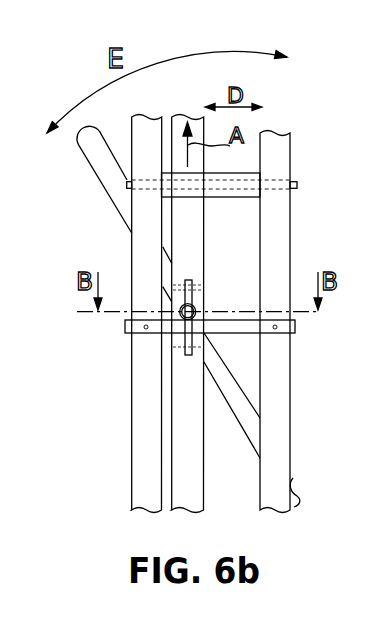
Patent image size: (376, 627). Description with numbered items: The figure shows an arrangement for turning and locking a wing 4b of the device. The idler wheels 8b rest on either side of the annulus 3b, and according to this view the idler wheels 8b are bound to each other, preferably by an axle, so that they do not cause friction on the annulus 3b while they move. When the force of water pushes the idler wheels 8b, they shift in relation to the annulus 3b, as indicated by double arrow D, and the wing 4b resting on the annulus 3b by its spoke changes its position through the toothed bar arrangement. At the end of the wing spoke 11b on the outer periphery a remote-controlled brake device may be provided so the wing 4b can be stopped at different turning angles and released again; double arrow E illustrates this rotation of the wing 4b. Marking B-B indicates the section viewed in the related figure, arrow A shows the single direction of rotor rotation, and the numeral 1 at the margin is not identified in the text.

The idler wheels 8b is at (150, 437).
The annulus 3b is at (193, 460).
The wing spoke 11b is at (194, 308).
The wing 4b is at (293, 478).
The apparatus 1 is at (372, 527).